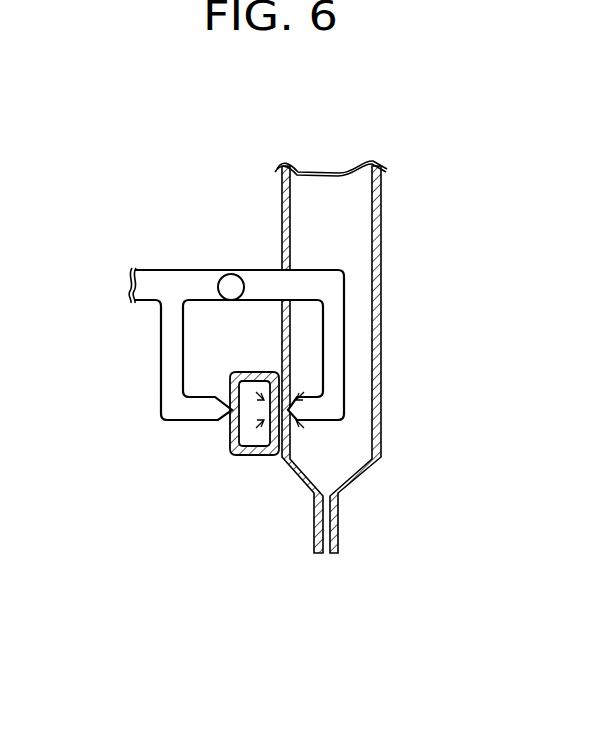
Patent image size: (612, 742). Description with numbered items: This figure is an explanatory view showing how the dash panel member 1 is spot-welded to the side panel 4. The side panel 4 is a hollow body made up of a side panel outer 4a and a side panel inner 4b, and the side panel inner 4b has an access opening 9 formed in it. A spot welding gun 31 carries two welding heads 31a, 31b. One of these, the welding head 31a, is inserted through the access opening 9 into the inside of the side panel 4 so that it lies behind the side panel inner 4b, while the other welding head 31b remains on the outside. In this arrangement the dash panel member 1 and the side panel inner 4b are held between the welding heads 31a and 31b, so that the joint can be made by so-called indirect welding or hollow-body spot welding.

The dash panel member 1 is at (253, 457).
The side panel 4 is at (392, 232).
The side panel outer 4a is at (381, 315).
The side panel inner 4b is at (313, 512).
The access opening 9 is at (282, 262).
The spot welding gun 31 is at (150, 355).
The welding head 31a is at (345, 399).
The welding head 31b is at (187, 424).